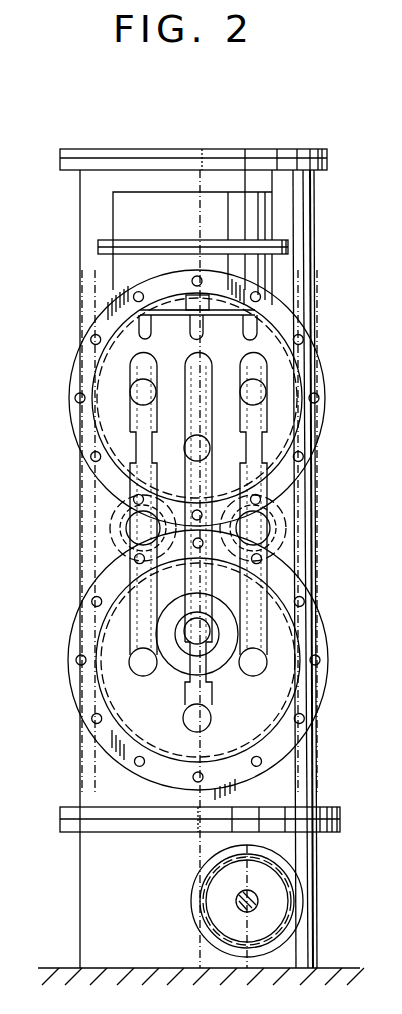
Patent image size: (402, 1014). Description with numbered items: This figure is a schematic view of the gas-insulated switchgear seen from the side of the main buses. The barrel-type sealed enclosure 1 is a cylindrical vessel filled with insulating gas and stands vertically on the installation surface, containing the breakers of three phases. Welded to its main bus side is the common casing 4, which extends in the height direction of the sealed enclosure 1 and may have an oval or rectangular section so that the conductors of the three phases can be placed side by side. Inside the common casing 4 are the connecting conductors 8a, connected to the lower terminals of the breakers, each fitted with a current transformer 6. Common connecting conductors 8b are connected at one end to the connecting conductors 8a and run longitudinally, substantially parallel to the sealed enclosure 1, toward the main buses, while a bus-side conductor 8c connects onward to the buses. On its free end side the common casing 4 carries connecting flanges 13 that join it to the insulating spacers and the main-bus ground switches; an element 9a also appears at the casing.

The sealed enclosure 1 is at (78, 272).
The common casing 4 is at (91, 454).
The current transformer 6 is at (204, 612).
The connecting conductor 8a is at (187, 616).
The common connecting conductor 8b is at (268, 628).
The bus-side conductor 8c is at (267, 391).
The support bar 9a is at (277, 217).
The connecting flange 13 is at (297, 315).